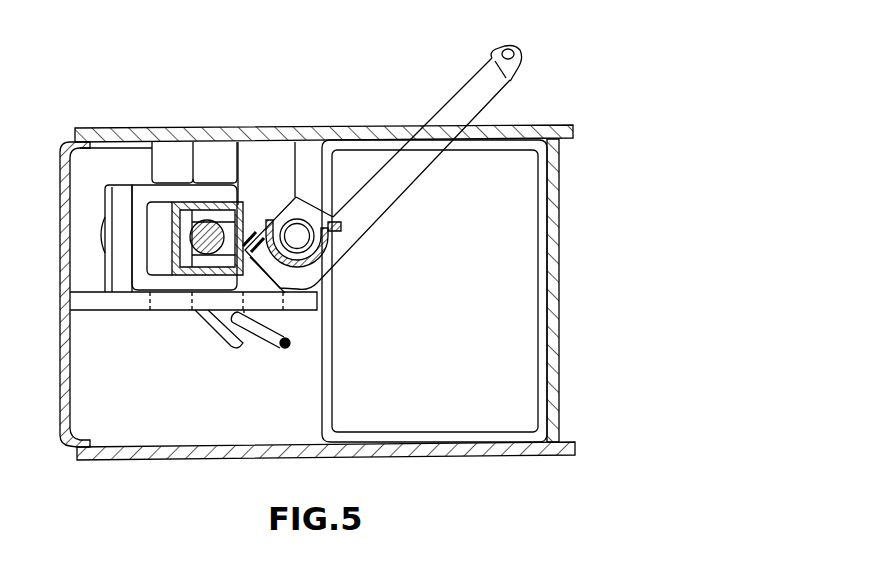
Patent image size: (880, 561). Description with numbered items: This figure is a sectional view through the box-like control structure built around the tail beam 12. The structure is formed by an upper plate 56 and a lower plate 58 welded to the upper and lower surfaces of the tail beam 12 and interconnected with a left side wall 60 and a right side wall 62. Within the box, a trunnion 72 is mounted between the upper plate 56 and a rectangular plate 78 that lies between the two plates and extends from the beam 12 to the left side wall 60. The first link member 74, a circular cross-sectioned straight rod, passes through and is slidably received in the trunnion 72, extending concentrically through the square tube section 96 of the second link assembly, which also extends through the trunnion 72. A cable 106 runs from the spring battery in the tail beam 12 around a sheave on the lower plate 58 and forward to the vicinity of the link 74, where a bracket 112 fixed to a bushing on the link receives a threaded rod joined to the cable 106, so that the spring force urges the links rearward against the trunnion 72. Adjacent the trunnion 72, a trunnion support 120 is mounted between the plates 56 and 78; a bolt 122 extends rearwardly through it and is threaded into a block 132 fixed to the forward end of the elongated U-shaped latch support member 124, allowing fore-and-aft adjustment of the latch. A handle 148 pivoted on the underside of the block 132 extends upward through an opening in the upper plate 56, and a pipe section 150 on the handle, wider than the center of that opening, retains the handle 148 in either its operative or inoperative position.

The tail beam 12 is at (546, 266).
The upper plate 56 is at (115, 131).
The lower plate 58 is at (177, 459).
The left side wall 60 is at (68, 307).
The right side wall 62 is at (558, 357).
The trunnion 72 is at (120, 187).
The first link member 74 is at (206, 221).
The rectangular plate 78 is at (102, 308).
The square tube section 96 is at (158, 268).
The cable 106 is at (273, 339).
The bracket 112 is at (228, 333).
The trunnion support 120 is at (288, 146).
The bolt 122 is at (293, 232).
The U-shaped latch support member 124 is at (334, 234).
The block 132 is at (295, 203).
The handle 148 is at (337, 248).
The pipe section 150 is at (424, 175).